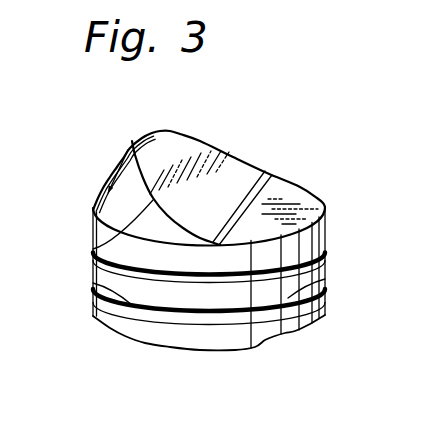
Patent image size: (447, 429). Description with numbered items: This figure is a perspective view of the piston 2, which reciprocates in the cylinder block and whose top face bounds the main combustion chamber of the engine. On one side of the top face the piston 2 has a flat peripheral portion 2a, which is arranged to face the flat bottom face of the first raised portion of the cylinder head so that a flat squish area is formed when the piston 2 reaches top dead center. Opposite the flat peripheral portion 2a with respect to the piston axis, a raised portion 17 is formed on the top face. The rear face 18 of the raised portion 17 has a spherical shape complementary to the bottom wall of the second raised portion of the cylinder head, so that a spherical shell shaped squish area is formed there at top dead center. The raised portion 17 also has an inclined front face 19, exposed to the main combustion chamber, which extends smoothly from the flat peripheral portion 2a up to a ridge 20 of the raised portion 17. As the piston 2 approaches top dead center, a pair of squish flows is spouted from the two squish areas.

The piston 2 is at (263, 332).
The flat peripheral portion 2a is at (327, 205).
The raised portion 17 is at (128, 172).
The rear face 18 is at (103, 189).
The inclined front face 19 is at (232, 165).
The ridge 20 is at (93, 250).